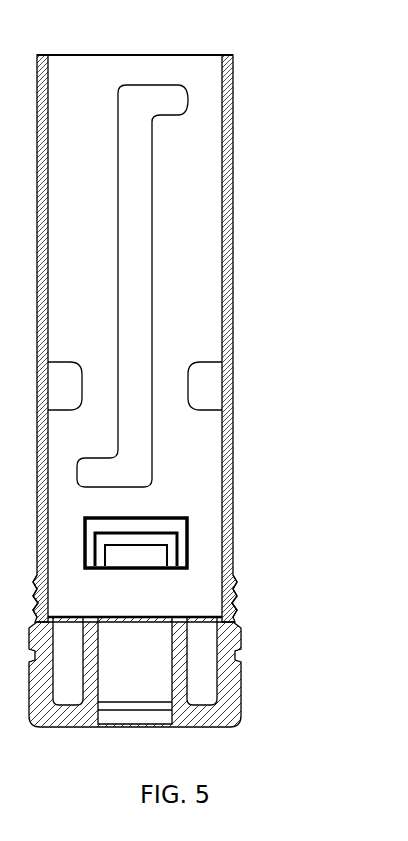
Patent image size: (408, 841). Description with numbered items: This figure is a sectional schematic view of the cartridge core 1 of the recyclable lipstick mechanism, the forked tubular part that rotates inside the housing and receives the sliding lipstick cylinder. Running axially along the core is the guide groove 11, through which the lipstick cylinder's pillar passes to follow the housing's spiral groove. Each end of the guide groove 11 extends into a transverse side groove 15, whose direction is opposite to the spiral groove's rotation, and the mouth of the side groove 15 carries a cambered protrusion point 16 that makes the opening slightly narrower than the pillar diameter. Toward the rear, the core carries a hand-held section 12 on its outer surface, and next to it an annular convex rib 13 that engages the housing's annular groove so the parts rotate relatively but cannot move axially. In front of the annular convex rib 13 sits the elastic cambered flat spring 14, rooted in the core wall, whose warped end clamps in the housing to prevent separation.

The cartridge core 1 is at (229, 138).
The guide groove 11 is at (137, 269).
The hand-held section 12 is at (241, 693).
The annular convex rib 13 is at (236, 583).
The flat spring 14 is at (181, 518).
The side groove 15 is at (187, 95).
The protrusion point 16 is at (155, 110).